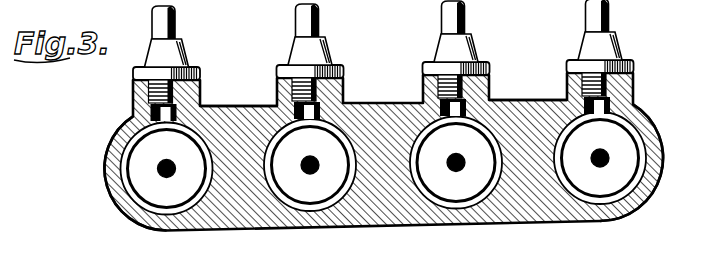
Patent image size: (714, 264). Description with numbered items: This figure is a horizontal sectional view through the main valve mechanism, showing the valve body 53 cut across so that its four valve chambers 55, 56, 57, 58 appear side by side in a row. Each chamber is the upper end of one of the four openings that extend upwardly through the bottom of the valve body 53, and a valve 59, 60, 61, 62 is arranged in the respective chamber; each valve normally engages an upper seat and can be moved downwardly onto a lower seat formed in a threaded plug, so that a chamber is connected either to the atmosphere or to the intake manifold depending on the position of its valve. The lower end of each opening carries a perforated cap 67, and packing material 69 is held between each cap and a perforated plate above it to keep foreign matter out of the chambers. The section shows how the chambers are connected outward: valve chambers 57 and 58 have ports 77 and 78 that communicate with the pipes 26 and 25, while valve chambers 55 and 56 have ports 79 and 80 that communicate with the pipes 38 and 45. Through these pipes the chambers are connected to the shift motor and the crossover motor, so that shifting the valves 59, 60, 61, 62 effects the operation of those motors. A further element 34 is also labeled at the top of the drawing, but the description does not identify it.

The pipe 25 is at (592, 20).
The pipe 26 is at (452, 25).
The conductor 34 is at (224, 7).
The pipe 38 is at (176, 25).
The pipe 45 is at (320, 22).
The valve body 53 is at (545, 208).
The valve chamber 55 is at (119, 132).
The valve chamber 56 is at (262, 106).
The valve chamber 57 is at (497, 118).
The valve chamber 58 is at (642, 135).
The valve 59 is at (167, 169).
The valve 60 is at (310, 165).
The valve 61 is at (456, 163).
The valve 62 is at (600, 158).
The perforated cap 67 is at (118, 8).
The packing material 69 is at (264, 6).
The port 77 is at (418, 104).
The port 78 is at (608, 108).
The port 79 is at (134, 106).
The port 80 is at (345, 100).